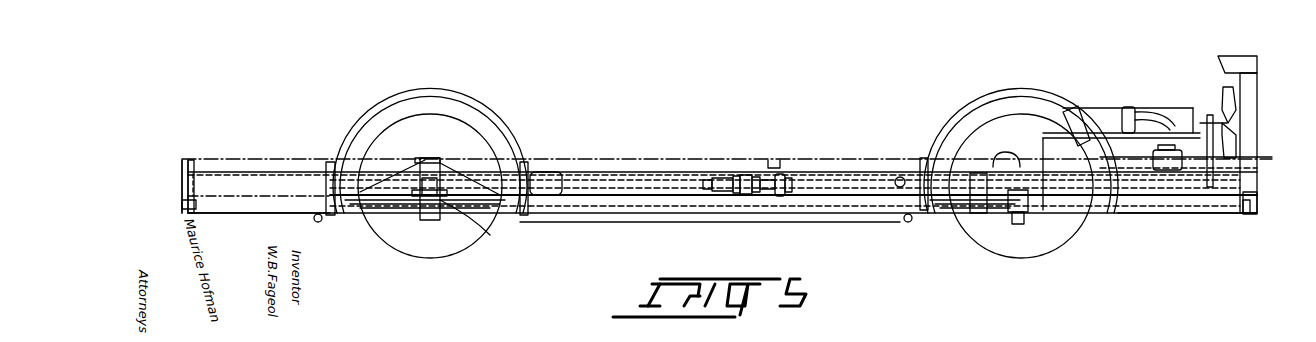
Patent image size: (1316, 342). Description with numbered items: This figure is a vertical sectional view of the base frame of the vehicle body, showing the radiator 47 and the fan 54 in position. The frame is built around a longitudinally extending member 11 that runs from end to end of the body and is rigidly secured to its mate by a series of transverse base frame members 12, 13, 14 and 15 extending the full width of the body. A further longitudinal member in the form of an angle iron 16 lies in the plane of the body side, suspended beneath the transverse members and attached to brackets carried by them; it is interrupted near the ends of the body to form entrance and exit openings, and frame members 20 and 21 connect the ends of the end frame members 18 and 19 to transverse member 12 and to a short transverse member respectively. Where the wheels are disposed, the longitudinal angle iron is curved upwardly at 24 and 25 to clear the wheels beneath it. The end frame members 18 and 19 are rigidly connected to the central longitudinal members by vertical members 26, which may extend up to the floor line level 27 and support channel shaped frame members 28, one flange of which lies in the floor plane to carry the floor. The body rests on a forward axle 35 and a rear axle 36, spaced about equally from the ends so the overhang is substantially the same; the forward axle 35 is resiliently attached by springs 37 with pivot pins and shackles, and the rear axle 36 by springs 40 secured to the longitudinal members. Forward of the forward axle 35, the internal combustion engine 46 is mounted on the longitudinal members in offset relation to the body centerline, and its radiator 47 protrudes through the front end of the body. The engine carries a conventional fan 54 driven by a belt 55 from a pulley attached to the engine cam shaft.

The longitudinally extending member 11 is at (215, 188).
The transverse base frame member 12 is at (331, 163).
The transverse base frame member 13 is at (522, 160).
The transverse base frame member 14 is at (770, 158).
The transverse base frame member 15 is at (917, 162).
The angle iron 16 is at (760, 213).
The end frame member 18 is at (1258, 200).
The end frame member 19 is at (182, 205).
The frame member 20 is at (262, 213).
The frame member 21 is at (1240, 213).
The upward curve 24 is at (440, 95).
The upward curve 25 is at (1020, 90).
The vertical member 26 is at (210, 170).
The floor line level 27 is at (270, 161).
The channel shaped frame member 28 is at (184, 162).
The forward axle 35 is at (1022, 224).
The rear axle 36 is at (430, 197).
The spring 37 is at (980, 205).
The spring 40 is at (474, 222).
The internal combustion engine 46 is at (1168, 105).
The radiator 47 is at (1250, 105).
The fan 54 is at (1235, 145).
The belt 55 is at (1210, 115).